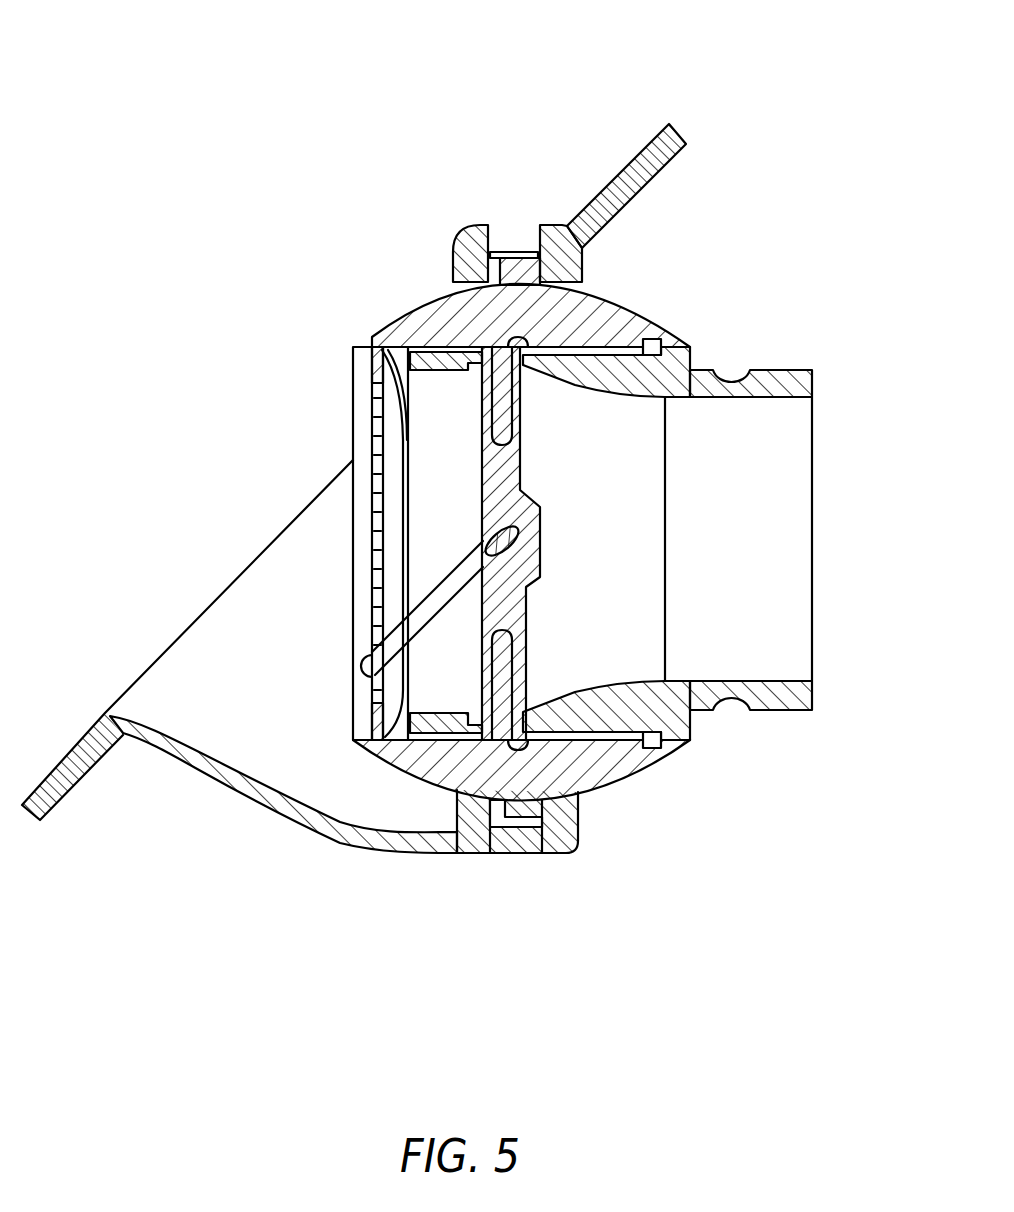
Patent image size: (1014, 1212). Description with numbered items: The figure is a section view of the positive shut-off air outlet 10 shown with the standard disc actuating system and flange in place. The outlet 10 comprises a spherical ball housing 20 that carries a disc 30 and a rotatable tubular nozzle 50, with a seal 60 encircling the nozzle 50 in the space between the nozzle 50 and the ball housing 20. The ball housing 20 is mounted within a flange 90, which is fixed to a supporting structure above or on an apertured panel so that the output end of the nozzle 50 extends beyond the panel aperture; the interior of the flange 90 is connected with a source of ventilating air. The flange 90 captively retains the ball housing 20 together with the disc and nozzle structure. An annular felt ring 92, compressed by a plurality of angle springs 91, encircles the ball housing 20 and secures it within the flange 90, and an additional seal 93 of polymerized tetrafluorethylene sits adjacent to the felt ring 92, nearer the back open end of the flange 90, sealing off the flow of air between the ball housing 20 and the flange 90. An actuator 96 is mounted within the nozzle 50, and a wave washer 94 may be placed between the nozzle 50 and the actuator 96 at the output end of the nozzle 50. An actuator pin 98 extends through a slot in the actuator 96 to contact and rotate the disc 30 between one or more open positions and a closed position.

The positive shut-off air outlet 10 is at (170, 145).
The spherical ball housing 20 is at (650, 763).
The disc 30 is at (522, 478).
The rotatable tubular nozzle 50 is at (800, 370).
The seal 60 is at (527, 340).
The flange 90 is at (522, 853).
The angle springs 91 is at (515, 250).
The felt ring 92 is at (578, 853).
The seal 93 is at (482, 853).
The wave washer 94 is at (407, 450).
The actuator 96 is at (372, 367).
The actuator pin 98 is at (362, 676).